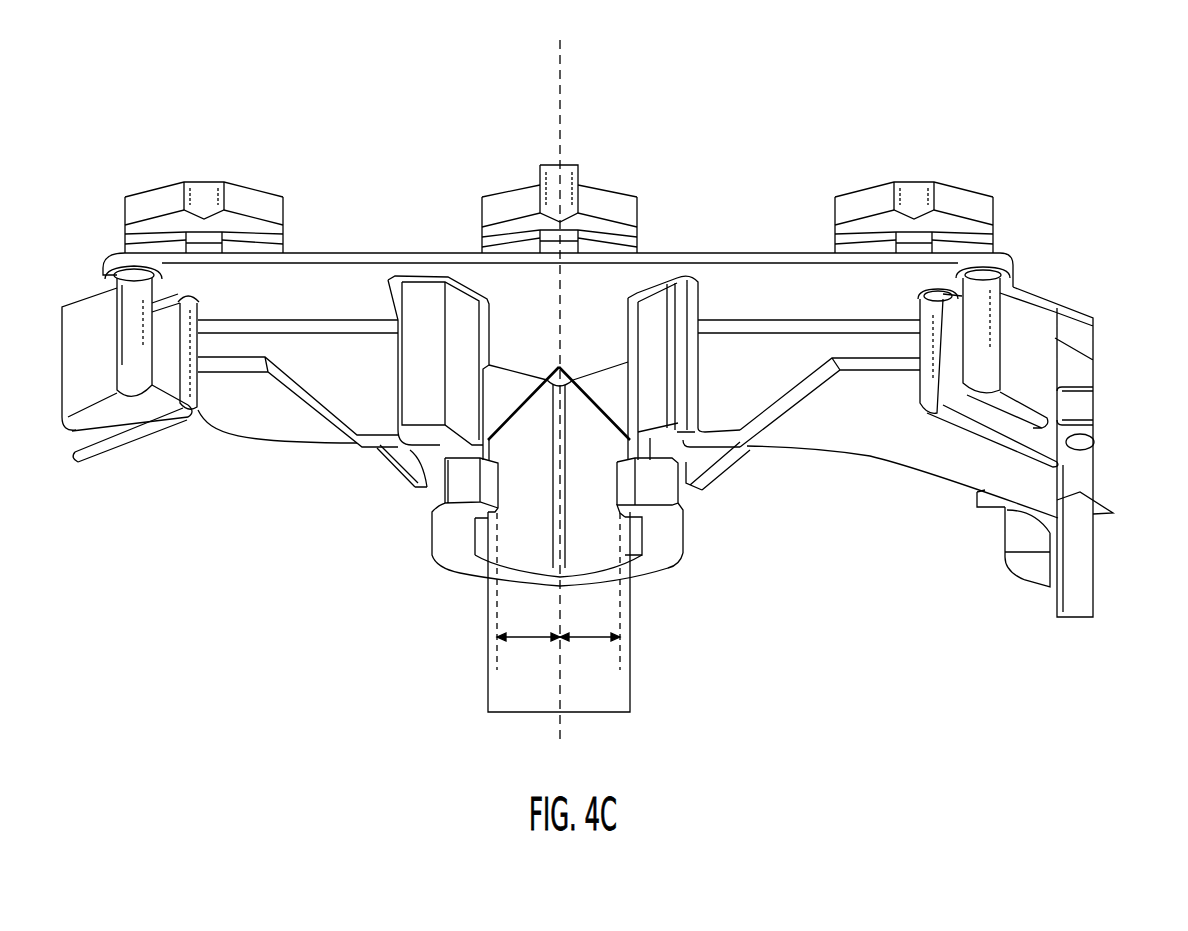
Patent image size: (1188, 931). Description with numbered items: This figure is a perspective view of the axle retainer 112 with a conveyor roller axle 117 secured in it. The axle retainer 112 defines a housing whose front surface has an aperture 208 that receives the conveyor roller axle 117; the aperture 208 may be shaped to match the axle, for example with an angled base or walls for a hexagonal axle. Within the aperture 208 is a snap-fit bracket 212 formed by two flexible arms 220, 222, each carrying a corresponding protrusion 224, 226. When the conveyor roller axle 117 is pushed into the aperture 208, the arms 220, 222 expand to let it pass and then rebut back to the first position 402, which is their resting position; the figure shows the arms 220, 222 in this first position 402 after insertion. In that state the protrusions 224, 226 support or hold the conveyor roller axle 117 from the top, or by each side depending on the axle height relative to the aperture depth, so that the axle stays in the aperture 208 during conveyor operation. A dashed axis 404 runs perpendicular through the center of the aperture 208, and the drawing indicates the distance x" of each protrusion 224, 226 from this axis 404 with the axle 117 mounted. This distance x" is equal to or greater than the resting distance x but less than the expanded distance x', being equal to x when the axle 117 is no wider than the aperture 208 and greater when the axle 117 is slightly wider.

The axle retainer 112 is at (918, 163).
The conveyor roller axle 117 is at (632, 675).
The aperture 208 is at (595, 385).
The snap-fit bracket 212 is at (696, 392).
The arm 220 is at (640, 490).
The arm 222 is at (462, 535).
The protrusion 224 is at (628, 488).
The protrusion 226 is at (470, 487).
The first position 402 is at (688, 566).
The axis 404 is at (562, 127).